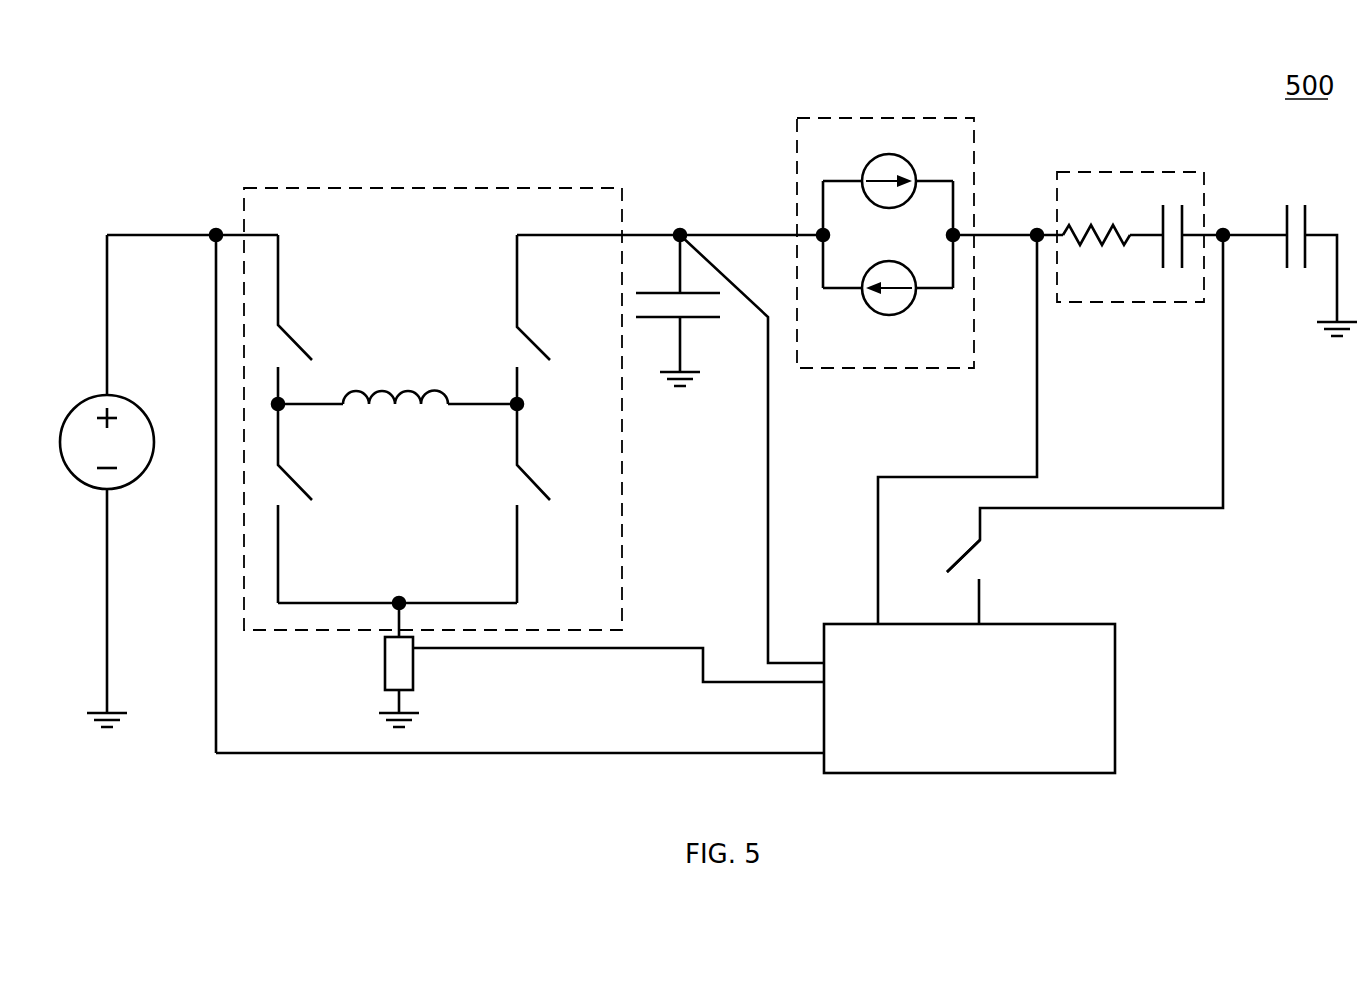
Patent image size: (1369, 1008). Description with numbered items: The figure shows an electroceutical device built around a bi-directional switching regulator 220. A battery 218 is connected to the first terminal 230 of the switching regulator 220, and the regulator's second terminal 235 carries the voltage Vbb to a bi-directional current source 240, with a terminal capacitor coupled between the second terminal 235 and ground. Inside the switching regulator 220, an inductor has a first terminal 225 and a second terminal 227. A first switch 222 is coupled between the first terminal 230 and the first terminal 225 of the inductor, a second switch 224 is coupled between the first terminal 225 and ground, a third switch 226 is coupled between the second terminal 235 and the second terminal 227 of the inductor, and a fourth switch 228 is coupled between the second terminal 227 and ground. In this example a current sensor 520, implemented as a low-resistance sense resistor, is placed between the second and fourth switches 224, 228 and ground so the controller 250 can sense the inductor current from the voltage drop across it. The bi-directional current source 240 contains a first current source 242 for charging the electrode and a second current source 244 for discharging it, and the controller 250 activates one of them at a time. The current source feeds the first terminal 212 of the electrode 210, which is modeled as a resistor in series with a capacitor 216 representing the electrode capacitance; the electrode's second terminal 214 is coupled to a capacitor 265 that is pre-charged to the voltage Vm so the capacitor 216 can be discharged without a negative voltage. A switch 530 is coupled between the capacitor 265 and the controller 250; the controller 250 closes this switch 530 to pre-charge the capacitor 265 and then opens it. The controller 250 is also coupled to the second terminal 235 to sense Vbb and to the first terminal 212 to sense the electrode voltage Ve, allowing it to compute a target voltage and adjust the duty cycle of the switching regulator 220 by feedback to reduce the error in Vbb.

The battery 218 is at (130, 400).
The first terminal 230 is at (243, 222).
The bi-directional switching regulator 220 is at (432, 186).
The first switch 222 is at (305, 322).
The second switch 224 is at (305, 478).
The third switch 226 is at (527, 325).
The fourth switch 228 is at (540, 475).
The first terminal of the inductor 225 is at (283, 410).
The second terminal of the inductor 227 is at (513, 410).
The current sensor 520 is at (383, 650).
The second terminal 235 is at (622, 220).
The bi-directional current source 240 is at (895, 223).
The first current source 242 is at (873, 160).
The second current source 244 is at (883, 318).
The first terminal of the electrode 212 is at (1055, 230).
The electrode 210 is at (1140, 264).
The capacitor 216 is at (1160, 250).
The second terminal of the electrode 214 is at (1203, 232).
The switch 530 is at (952, 556).
The capacitor 265 is at (1280, 222).
The controller 250 is at (1062, 622).